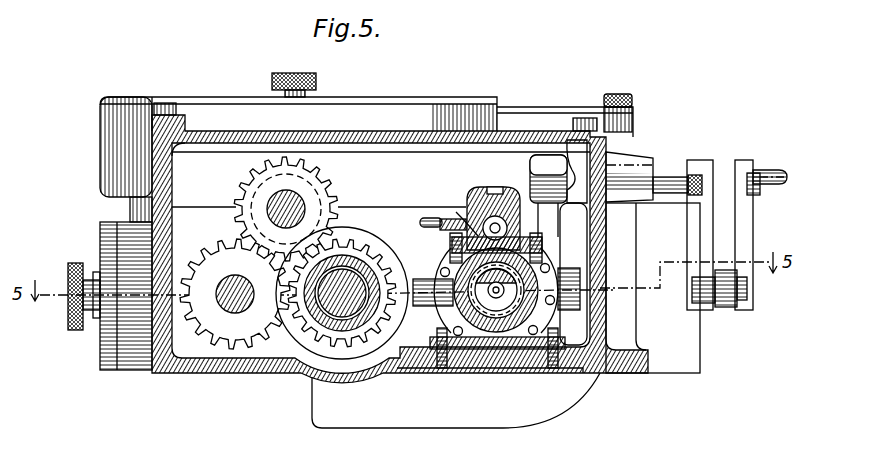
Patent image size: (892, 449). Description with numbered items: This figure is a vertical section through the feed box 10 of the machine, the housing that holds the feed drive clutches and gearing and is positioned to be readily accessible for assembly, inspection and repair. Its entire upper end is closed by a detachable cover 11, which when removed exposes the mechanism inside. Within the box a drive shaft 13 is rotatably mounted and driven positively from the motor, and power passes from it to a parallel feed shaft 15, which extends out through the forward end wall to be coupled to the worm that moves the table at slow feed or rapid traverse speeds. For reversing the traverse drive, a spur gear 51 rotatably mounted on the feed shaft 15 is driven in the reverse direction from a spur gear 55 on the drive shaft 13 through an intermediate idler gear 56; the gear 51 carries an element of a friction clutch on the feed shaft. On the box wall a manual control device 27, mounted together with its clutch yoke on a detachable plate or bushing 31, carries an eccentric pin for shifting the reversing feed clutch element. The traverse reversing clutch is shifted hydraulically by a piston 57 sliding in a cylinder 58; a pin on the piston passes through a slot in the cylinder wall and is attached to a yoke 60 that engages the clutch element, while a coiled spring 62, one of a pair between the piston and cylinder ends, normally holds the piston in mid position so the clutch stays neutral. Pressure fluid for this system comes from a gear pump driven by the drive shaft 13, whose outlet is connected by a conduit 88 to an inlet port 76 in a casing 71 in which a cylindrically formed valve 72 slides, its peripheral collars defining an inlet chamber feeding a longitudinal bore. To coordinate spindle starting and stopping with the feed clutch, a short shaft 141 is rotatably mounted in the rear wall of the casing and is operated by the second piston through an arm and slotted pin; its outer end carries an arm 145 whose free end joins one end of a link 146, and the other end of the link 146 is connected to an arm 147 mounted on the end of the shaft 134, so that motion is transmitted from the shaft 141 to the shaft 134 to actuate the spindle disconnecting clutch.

The feed box 10 is at (194, 382).
The detachable cover 11 is at (517, 130).
The drive shaft 13 is at (232, 312).
The feed shaft 15 is at (354, 284).
The control device 27 is at (78, 264).
The detachable plate or bushing 31 is at (101, 371).
The spur gear 51 is at (368, 340).
The spur gear 55 is at (235, 285).
The intermediate idler gear 56 is at (318, 193).
The piston 57 is at (522, 348).
The cylinder 58 is at (478, 348).
The yoke 60 is at (420, 278).
The coiled spring 62 is at (540, 247).
The casing 71 is at (477, 206).
The valve 72 is at (485, 205).
The inlet port 76 is at (444, 218).
The conduit 88 is at (413, 206).
The shaft 134 is at (770, 172).
The short shaft 141 is at (667, 174).
The arm 145 is at (711, 202).
The link 146 is at (727, 310).
The arm 147 is at (742, 239).